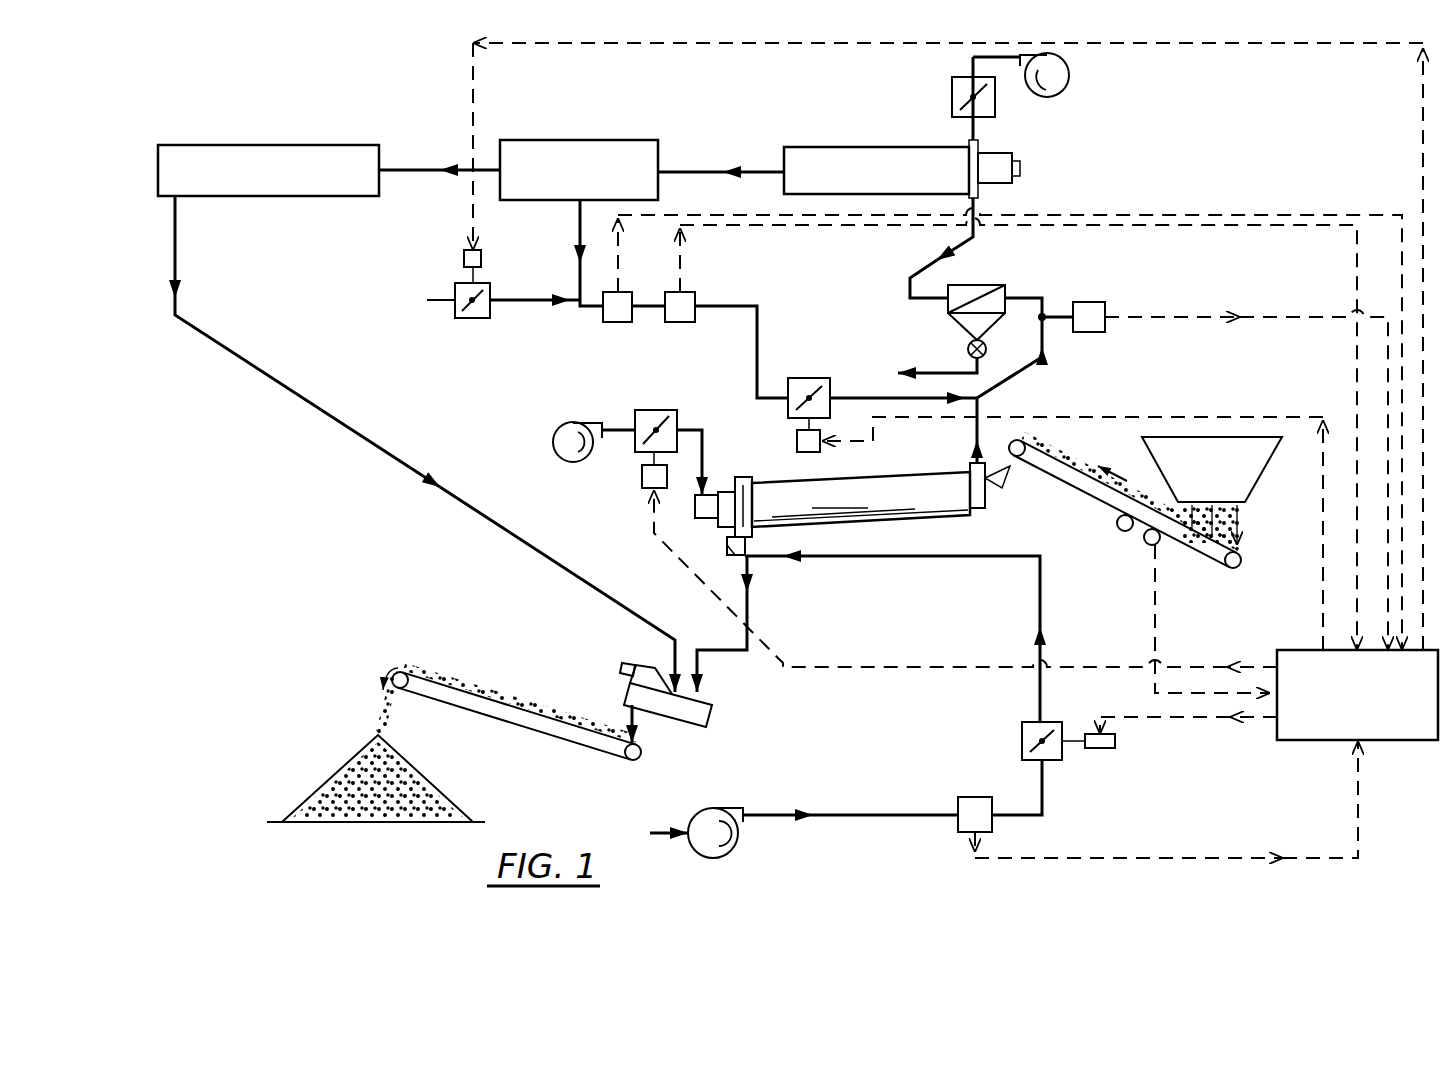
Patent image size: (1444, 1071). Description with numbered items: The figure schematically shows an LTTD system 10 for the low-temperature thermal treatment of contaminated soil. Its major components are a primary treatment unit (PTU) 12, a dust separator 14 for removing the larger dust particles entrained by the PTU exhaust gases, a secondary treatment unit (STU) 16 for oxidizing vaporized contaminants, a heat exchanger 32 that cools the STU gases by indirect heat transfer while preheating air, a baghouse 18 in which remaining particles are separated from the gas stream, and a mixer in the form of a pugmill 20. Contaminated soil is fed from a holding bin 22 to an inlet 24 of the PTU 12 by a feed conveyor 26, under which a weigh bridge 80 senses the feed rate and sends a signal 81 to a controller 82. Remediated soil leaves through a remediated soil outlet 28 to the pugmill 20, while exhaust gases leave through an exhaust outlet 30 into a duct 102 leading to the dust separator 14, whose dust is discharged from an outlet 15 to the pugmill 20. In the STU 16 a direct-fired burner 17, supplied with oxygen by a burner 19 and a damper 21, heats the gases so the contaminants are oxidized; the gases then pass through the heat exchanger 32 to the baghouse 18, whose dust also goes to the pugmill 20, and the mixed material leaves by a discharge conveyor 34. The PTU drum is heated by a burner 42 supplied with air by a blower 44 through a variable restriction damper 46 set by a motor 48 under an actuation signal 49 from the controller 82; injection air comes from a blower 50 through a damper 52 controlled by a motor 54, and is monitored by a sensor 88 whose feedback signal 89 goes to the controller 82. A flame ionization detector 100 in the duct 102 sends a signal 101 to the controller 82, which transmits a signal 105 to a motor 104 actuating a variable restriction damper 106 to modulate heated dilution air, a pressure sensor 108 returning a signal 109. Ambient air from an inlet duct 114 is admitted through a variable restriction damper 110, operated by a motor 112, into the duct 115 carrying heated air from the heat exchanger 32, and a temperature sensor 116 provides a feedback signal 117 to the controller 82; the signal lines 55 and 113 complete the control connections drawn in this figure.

The LTTD system 10 is at (411, 112).
The primary treatment unit (PTU) 12 is at (944, 524).
The dust separator 14 is at (997, 276).
The outlet 15 is at (968, 352).
The secondary treatment unit (STU) 16 is at (852, 146).
The direct-fired burner 17 is at (1002, 152).
The baghouse 18 is at (325, 143).
The burner (blower) 19 is at (1069, 72).
The pugmill 20 is at (716, 717).
The damper 21 is at (996, 108).
The holding bin 22 is at (1262, 479).
The inlet 24 is at (1000, 482).
The feed conveyor 26 is at (1100, 500).
The remediated soil outlet 28 is at (750, 540).
The exhaust outlet 30 is at (975, 462).
The heat exchanger 32 is at (622, 140).
The discharge conveyor 34 is at (517, 725).
The burner 42 is at (708, 490).
The blower 44 is at (582, 422).
The variable restriction damper 46 is at (663, 410).
The motor 48 is at (642, 478).
The actuation signal 49 is at (886, 668).
The blower 50 is at (709, 808).
The damper 52 is at (1022, 732).
The motor 54 is at (1103, 748).
The signal line 55 is at (1186, 718).
The weigh bridge 80 is at (1158, 543).
The signal 81 is at (1157, 610).
The controller 82 is at (1304, 740).
The sensor 88 is at (975, 797).
The feedback signal 89 is at (1233, 858).
The flame ionization detector (FID) 100 is at (1093, 302).
The signal 101 is at (1318, 317).
The duct 102 is at (1044, 366).
The motor 104 is at (807, 452).
The signal 105 is at (868, 441).
The variable restriction damper 106 is at (809, 378).
The pressure sensor 108 is at (698, 292).
The signal 109 is at (1233, 225).
The variable restriction damper 110 is at (482, 318).
The motor 112 is at (464, 258).
The signal line 113 is at (862, 45).
The inlet duct 114 is at (442, 305).
The duct 115 is at (603, 321).
The temperature sensor 116 is at (624, 290).
The feedback signal 117 is at (1152, 215).